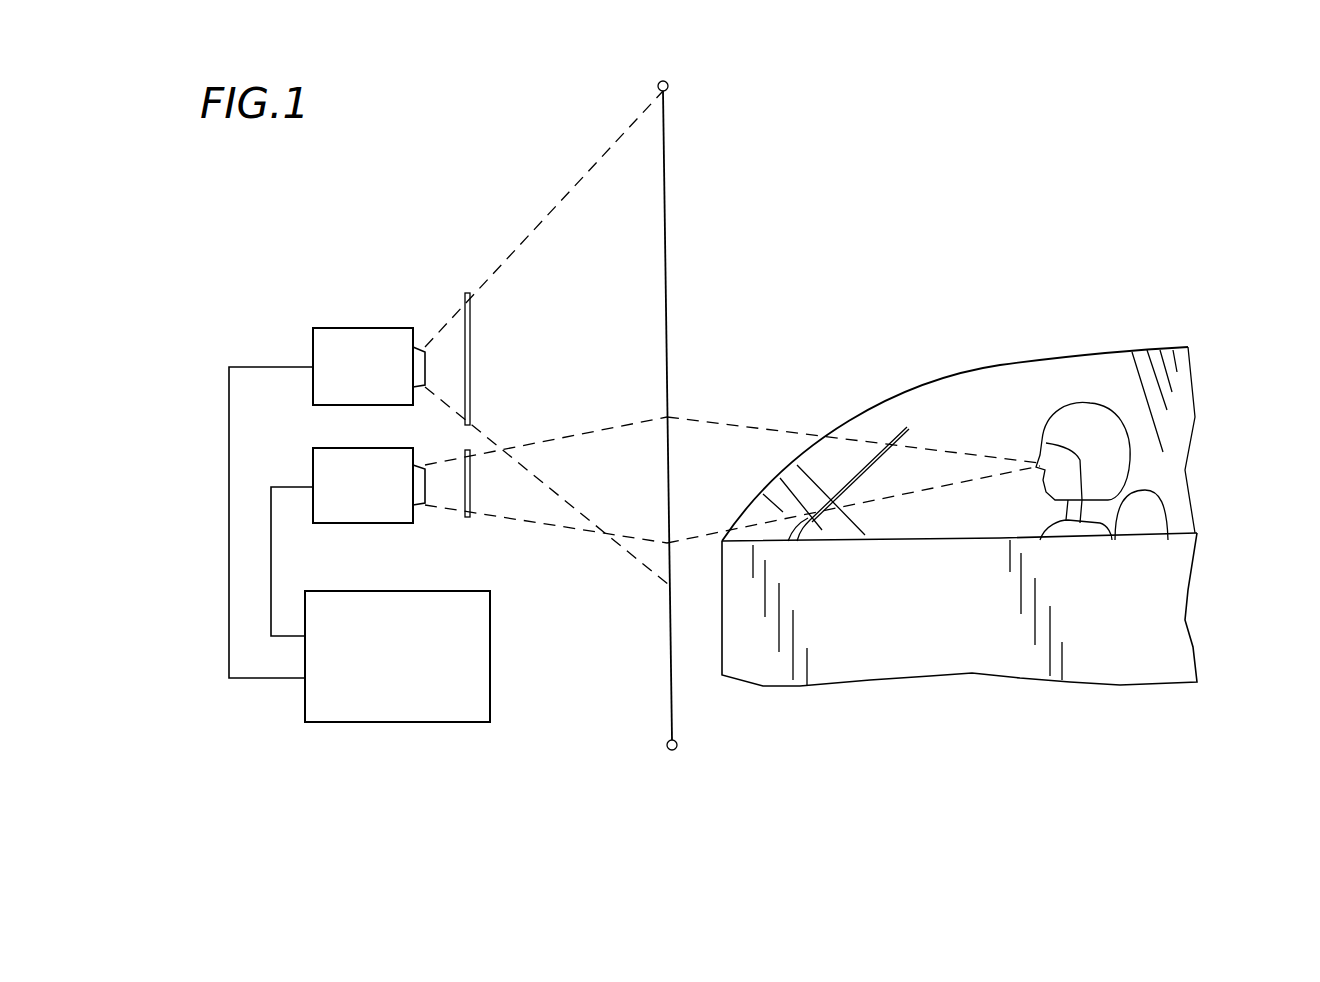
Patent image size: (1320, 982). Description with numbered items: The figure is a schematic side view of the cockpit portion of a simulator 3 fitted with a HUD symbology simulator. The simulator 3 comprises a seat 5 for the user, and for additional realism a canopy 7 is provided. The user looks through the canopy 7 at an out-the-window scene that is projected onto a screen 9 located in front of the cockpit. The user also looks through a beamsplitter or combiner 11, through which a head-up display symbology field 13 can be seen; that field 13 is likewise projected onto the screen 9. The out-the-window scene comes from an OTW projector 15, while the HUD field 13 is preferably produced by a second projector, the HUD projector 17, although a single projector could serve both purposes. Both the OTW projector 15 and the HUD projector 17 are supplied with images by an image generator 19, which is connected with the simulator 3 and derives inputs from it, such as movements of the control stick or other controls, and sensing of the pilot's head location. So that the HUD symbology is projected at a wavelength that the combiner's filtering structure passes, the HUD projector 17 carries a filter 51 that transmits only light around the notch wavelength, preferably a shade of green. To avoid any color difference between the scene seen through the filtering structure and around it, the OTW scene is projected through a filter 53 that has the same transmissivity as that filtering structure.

The simulator 3 is at (1065, 689).
The seat 5 is at (1145, 518).
The canopy 7 is at (1050, 358).
The screen 9 is at (664, 120).
The beamsplitter or combiner 11 is at (860, 478).
The head-up display symbology field 13 is at (667, 417).
The OTW projector 15 is at (349, 381).
The HUD projector 17 is at (349, 500).
The image generator 19 is at (381, 671).
The filter 51 is at (470, 517).
The filter 53 is at (463, 298).